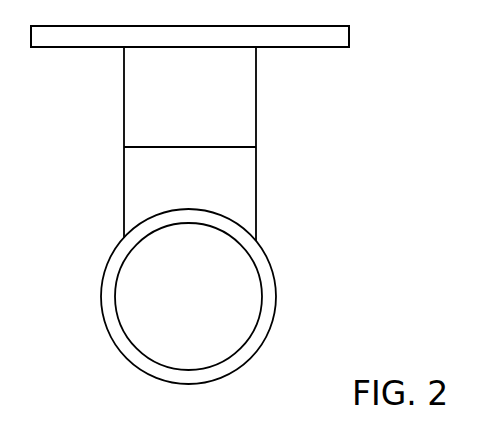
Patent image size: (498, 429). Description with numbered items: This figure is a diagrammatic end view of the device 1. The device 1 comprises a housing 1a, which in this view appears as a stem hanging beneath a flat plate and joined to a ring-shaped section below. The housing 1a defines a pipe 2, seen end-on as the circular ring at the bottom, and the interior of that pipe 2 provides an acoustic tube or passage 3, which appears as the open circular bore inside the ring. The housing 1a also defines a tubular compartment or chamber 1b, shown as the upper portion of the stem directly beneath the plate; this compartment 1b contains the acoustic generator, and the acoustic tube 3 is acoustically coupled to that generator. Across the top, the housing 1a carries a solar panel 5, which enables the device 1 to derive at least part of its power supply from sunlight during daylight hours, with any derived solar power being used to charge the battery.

The device 1 is at (268, 144).
The housing 1a is at (218, 192).
The tubular compartment 1b is at (236, 113).
The pipe 2 is at (272, 298).
The acoustic tube 3 is at (246, 307).
The solar panel 5 is at (330, 47).